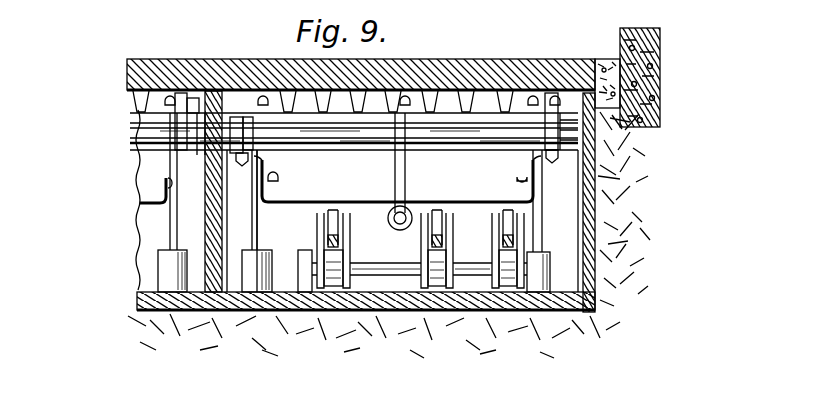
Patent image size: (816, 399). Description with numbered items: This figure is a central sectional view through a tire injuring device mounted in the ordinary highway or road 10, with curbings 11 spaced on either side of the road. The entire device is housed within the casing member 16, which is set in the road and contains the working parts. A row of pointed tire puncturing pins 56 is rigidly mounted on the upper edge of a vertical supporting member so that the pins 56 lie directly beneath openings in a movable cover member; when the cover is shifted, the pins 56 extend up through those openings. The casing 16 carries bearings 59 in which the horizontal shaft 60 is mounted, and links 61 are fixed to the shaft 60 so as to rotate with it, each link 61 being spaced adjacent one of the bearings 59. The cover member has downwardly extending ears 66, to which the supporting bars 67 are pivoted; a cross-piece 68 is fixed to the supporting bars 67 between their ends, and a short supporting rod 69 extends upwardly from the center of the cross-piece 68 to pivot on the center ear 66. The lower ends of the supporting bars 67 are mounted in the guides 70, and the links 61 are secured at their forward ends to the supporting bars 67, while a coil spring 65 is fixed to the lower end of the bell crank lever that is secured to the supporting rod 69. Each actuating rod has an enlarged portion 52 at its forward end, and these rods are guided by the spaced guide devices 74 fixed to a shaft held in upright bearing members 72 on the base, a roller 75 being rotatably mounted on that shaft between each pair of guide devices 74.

The highway or road 10 is at (533, 98).
The curbing 11 is at (667, 43).
The casing member 16 is at (548, 68).
The enlarged portion 52 is at (338, 225).
The tire puncturing pins 56 is at (141, 96).
The bearing 59 is at (203, 132).
The horizontal shaft 60 is at (143, 133).
The link 61 is at (182, 117).
The coil spring 65 is at (388, 218).
The ear 66 is at (264, 96).
The supporting bar 67 is at (170, 235).
The cross-piece 68 is at (143, 200).
The short supporting rod 69 is at (405, 160).
The guide 70 is at (167, 277).
The upright bearing member 72 is at (305, 274).
The guide device 74 is at (350, 247).
The roller 75 is at (334, 276).